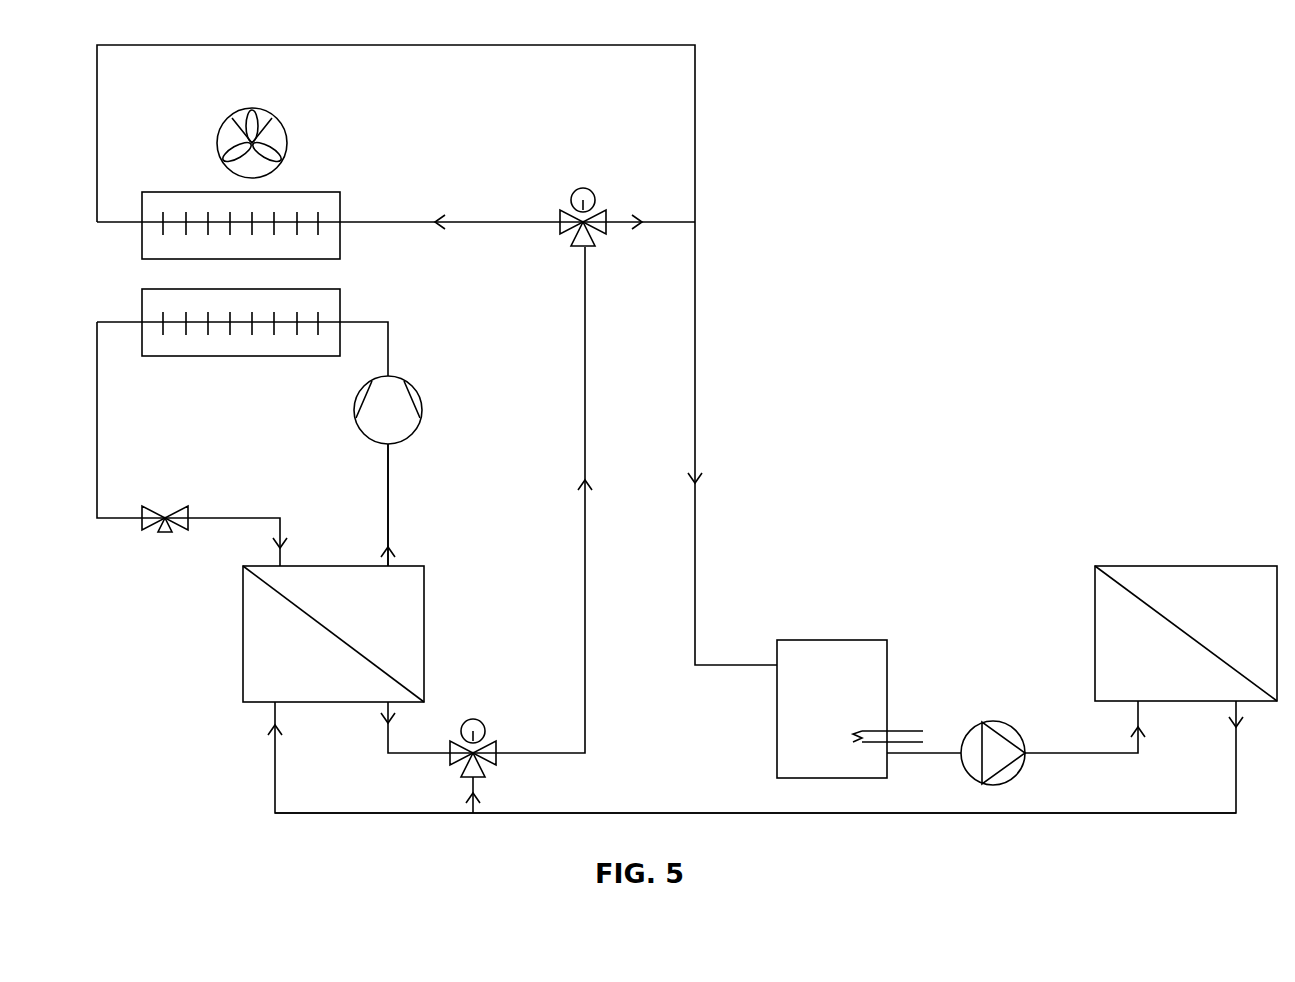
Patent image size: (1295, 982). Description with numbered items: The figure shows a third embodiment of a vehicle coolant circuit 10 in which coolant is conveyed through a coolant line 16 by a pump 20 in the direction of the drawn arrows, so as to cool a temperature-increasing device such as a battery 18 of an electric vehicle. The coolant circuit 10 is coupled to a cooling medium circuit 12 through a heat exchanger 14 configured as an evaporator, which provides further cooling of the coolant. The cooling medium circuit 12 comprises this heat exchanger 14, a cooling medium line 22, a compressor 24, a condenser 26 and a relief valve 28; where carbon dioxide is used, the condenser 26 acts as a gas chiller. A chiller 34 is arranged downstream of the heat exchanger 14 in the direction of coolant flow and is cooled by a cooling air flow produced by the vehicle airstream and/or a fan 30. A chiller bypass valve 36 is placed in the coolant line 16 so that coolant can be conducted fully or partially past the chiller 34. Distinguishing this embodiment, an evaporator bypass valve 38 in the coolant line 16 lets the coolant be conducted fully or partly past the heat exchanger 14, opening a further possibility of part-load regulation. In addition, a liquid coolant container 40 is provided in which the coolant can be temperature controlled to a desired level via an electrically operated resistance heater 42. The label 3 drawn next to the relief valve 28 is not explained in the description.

The coolant circuit 10 is at (746, 576).
The cooling medium circuit 12 is at (430, 348).
The heat exchanger 14 is at (255, 653).
The coolant line 16 is at (912, 813).
The battery 18 is at (1181, 572).
The pump 20 is at (1016, 729).
The cooling medium line 22 is at (394, 511).
The compressor 24 is at (398, 433).
The condenser 26 is at (308, 346).
The relief valve 28 is at (151, 535).
The valve port 3 is at (165, 535).
The fan 30 is at (262, 111).
The chiller 34 is at (308, 203).
The chiller bypass valve 36 is at (596, 215).
The evaporator bypass valve 38 is at (490, 740).
The liquid coolant container 40 is at (844, 647).
The electrically operated resistance heater 42 is at (900, 728).